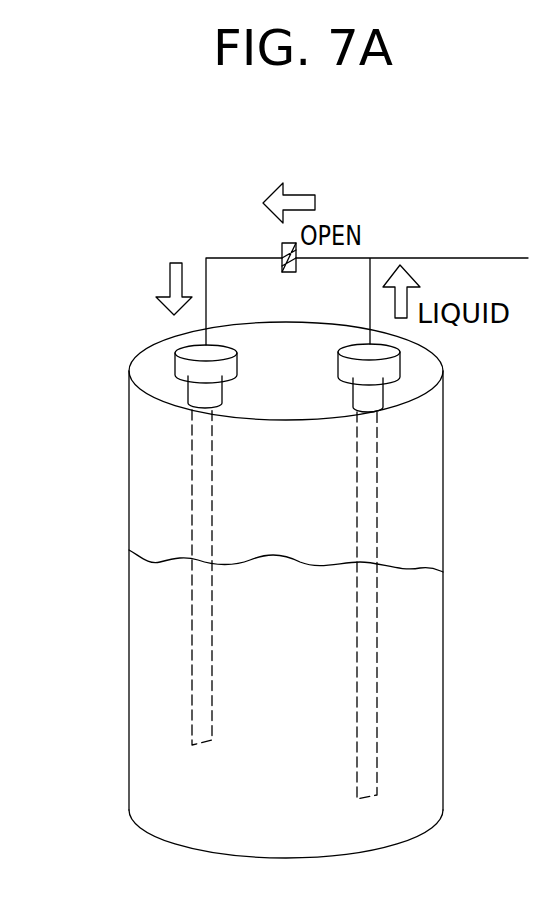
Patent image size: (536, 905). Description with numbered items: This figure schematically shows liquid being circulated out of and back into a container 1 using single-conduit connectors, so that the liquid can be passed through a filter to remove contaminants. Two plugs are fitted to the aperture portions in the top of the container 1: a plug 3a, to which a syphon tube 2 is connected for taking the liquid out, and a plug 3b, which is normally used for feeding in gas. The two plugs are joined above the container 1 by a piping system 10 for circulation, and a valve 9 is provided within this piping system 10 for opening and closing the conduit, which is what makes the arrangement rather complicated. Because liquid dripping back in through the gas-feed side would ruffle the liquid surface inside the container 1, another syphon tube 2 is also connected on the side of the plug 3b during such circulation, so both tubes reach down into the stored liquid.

The container 1 is at (443, 623).
The syphon tube 2 is at (187, 573).
The plug 3a is at (392, 370).
The plug 3b is at (177, 370).
The valve 9 is at (283, 245).
The piping system for circulation 10 is at (362, 258).